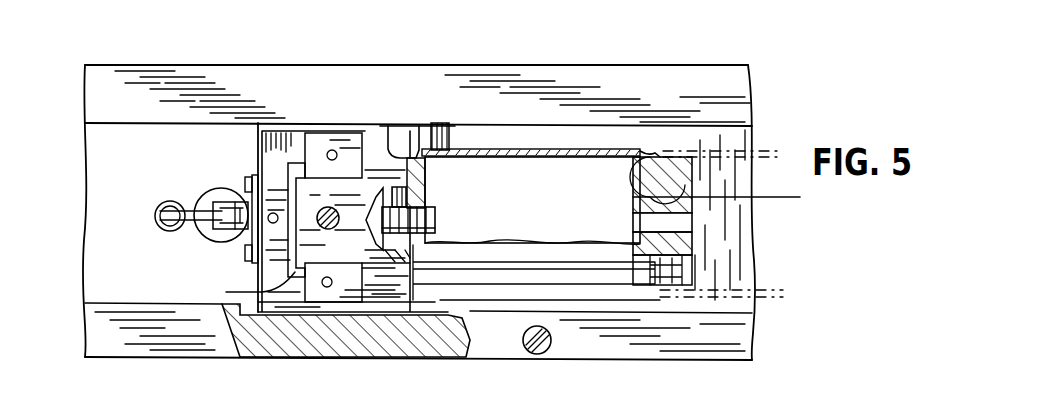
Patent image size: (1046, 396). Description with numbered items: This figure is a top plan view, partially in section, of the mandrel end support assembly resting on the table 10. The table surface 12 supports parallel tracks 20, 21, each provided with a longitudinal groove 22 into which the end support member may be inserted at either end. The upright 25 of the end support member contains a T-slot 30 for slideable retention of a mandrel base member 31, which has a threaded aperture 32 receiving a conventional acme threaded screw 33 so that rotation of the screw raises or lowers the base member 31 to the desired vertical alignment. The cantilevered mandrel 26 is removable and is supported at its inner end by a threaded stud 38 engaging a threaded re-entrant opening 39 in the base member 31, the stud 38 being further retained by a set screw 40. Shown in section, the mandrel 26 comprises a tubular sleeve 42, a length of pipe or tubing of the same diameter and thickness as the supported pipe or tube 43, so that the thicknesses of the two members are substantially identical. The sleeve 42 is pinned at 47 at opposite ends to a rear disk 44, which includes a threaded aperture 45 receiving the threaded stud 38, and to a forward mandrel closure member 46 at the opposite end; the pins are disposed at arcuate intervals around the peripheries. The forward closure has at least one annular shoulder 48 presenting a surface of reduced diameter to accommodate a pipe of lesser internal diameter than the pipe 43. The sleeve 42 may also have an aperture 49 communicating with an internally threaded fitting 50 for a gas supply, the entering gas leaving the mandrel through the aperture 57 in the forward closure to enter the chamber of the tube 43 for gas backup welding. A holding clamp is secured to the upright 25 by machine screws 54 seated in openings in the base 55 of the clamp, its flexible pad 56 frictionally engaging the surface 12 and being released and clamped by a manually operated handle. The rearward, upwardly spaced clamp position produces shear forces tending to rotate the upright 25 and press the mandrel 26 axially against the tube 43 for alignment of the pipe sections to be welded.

The table 10 is at (74, 95).
The table surface 12 is at (730, 140).
The track 20 is at (244, 72).
The track 21 is at (287, 348).
The longitudinal groove 22 is at (455, 318).
The upright 25 is at (262, 152).
The cantilevered mandrel 26 is at (557, 165).
The T-slot 30 is at (242, 289).
The mandrel base member 31 is at (292, 180).
The threaded aperture 32 is at (326, 229).
The acme threaded screw 33 is at (338, 208).
The threaded stud 38 is at (435, 223).
The threaded re-entrant opening 39 is at (458, 318).
The set screw 40 is at (430, 183).
The tubular sleeve 42 is at (503, 151).
The pipe or tube 43 is at (770, 150).
The rear disk 44 is at (428, 178).
The threaded aperture 45 is at (430, 198).
The forward mandrel closure member 46 is at (633, 187).
The pins 47 is at (393, 132).
The annular shoulder 48 is at (732, 200).
The aperture 49 is at (448, 128).
The internally threaded fitting 50 is at (420, 126).
The machine screws 54 is at (246, 183).
The base of the clamp 55 is at (210, 237).
The flexible pad 56 is at (207, 194).
The aperture in forward closure / handle 57 is at (678, 233).